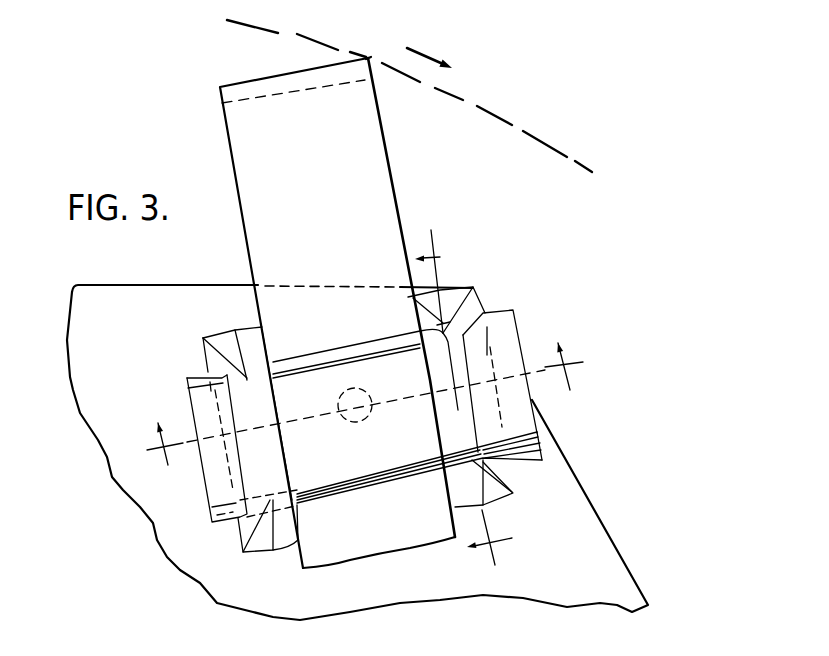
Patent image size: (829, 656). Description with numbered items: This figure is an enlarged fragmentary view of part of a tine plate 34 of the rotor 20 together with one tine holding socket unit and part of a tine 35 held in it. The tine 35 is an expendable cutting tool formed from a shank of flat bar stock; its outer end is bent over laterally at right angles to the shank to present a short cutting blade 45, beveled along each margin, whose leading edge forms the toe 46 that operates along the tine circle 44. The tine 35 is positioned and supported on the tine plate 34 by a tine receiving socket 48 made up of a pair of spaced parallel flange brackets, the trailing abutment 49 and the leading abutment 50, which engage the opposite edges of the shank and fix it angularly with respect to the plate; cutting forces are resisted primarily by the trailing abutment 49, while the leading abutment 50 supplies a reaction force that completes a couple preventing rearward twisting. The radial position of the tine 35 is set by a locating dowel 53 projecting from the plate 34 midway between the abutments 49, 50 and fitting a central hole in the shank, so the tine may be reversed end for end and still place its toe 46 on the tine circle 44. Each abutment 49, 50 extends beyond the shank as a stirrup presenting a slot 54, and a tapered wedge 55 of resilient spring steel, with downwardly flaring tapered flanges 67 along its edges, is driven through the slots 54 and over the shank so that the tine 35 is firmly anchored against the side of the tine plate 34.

The rotor 20 is at (98, 278).
The tine plate 34 is at (150, 290).
The tine 35 is at (247, 237).
The tine circle 44 is at (545, 125).
The cutting blade 45 is at (213, 102).
The toe 46 is at (368, 60).
The tine receiving socket 48 is at (292, 556).
The trailing abutment 49 is at (210, 337).
The leading abutment 50 is at (475, 290).
The locating dowel 53 is at (366, 390).
The slot 54 is at (513, 467).
The tapered wedge 55 is at (320, 384).
The flanges 67 is at (512, 330).